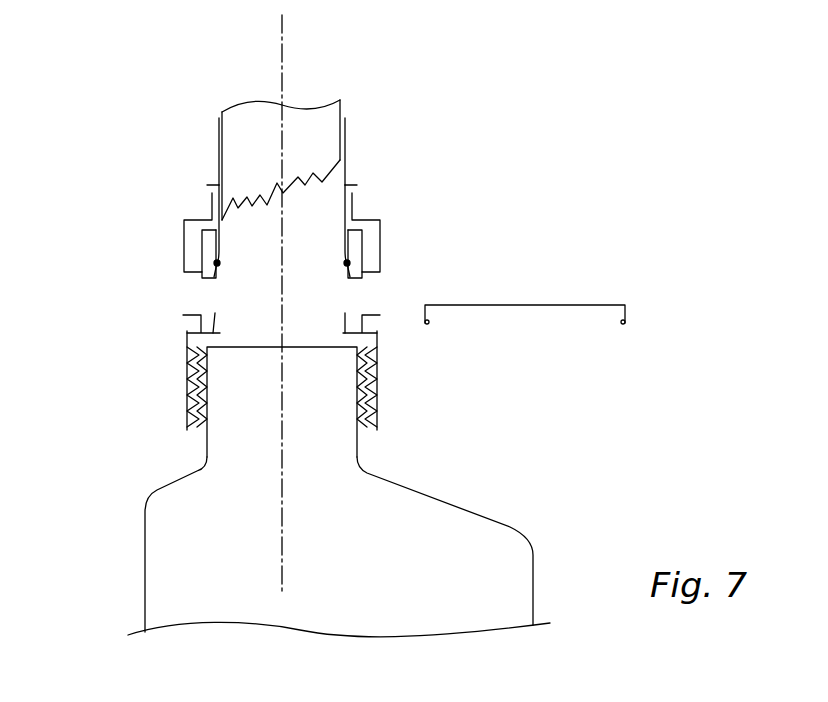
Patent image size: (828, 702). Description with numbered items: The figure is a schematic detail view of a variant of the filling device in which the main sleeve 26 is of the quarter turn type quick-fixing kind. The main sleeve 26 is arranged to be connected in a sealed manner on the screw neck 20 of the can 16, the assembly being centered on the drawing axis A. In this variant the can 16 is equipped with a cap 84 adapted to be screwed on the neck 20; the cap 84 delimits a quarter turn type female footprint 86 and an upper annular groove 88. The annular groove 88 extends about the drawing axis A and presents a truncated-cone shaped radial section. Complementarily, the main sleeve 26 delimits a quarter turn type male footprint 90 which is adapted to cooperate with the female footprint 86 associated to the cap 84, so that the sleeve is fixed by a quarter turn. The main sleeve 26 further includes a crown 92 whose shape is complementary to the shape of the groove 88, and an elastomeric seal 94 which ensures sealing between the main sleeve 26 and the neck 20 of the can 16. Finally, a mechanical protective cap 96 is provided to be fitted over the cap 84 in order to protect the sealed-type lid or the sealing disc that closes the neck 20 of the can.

The drawing axis A is at (282, 33).
The can 16 is at (118, 524).
The neck 20 is at (199, 347).
The main sleeve 26 is at (405, 128).
The cap 84 is at (176, 374).
The female footprint 86 is at (182, 320).
The annular groove 88 is at (208, 327).
The male footprint 90 is at (380, 248).
The crown 92 is at (356, 282).
The elastomeric seal 94 is at (349, 261).
The mechanical protective cap 96 is at (585, 298).